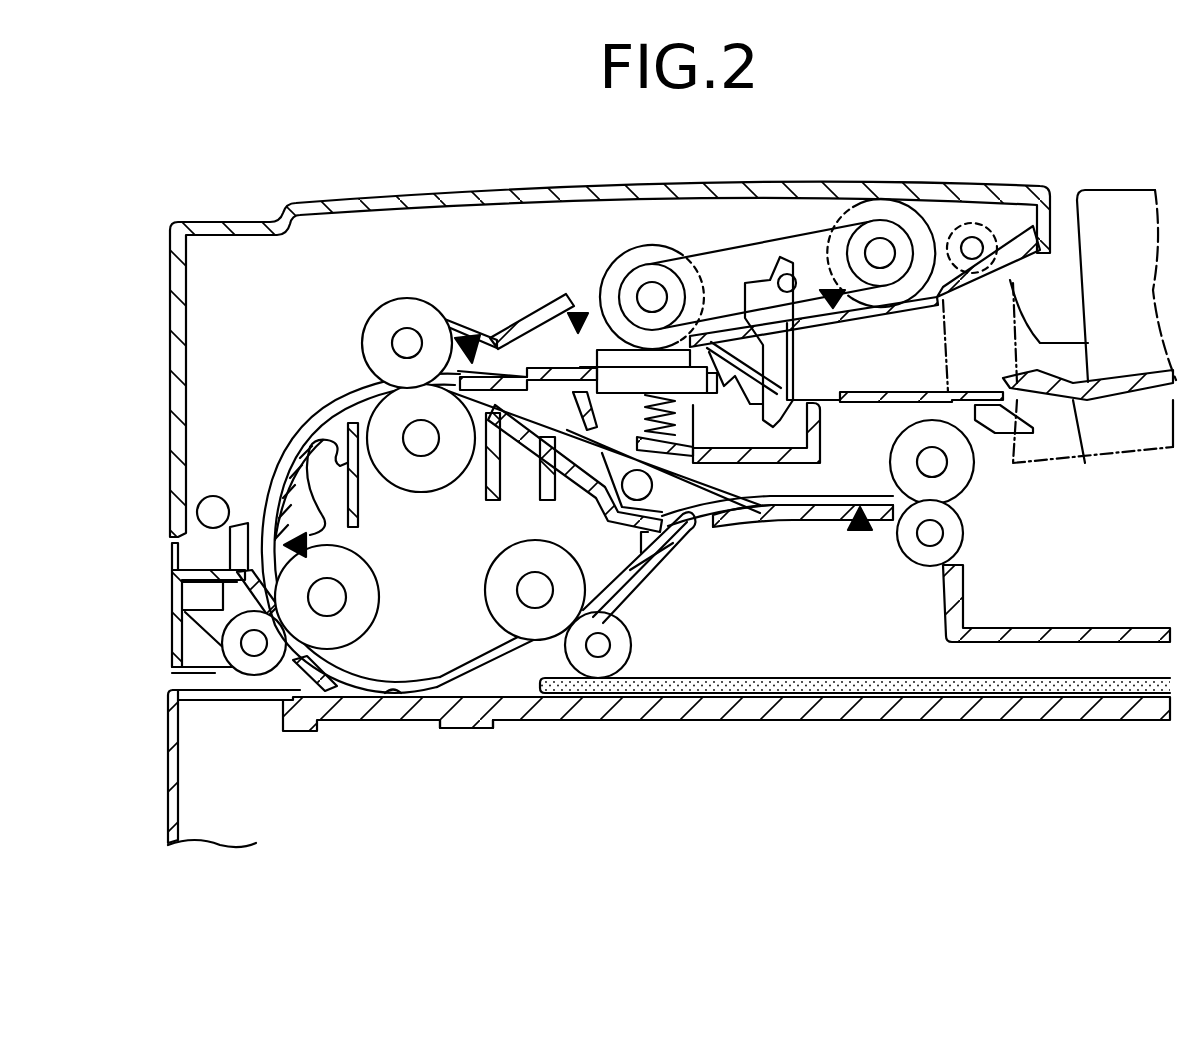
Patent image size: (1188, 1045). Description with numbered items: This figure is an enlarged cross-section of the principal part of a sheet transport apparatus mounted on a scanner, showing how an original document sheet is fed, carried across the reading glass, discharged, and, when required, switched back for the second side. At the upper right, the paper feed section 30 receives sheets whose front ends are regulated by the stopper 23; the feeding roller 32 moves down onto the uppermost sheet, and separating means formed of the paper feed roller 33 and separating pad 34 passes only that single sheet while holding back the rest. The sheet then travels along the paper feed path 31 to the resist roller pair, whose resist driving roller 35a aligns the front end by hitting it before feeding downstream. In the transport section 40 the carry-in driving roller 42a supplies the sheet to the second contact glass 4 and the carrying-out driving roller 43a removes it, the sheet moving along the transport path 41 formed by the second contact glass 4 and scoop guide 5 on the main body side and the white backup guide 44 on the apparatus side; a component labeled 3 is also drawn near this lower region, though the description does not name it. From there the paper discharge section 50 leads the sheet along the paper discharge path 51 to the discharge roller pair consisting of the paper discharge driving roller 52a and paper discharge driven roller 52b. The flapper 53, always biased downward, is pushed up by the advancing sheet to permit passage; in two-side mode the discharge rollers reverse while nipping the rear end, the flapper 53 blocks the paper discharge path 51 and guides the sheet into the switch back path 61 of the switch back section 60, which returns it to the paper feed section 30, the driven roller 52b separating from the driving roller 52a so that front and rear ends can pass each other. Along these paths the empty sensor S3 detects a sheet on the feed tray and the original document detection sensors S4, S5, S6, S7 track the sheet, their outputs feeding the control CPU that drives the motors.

The recording sheet 3 is at (740, 722).
The second contact glass 4 is at (373, 720).
The scoop guide 5 is at (477, 722).
The stopper 23 is at (777, 350).
The paper feed section 30 is at (528, 270).
The paper feed path 31 is at (520, 357).
The feeding roller 32 is at (877, 204).
The paper feed roller 33 is at (633, 255).
The separating pad 34 is at (663, 350).
The resist driving roller 35a is at (387, 420).
The transport section 40 is at (407, 663).
The transport path 41 is at (283, 698).
The carry-in driving roller 42a is at (360, 573).
The carrying-out driving roller 43a is at (560, 550).
The white backup guide 44 is at (467, 677).
The paper discharge section 50 is at (800, 543).
The paper discharge path 51 is at (665, 545).
The paper discharge driving roller 52a is at (960, 477).
The paper discharge driven roller 52b is at (953, 537).
The flapper 53 is at (708, 500).
The switch back section 60 is at (527, 470).
The switch back path 61 is at (478, 484).
The empty sensor S3 is at (826, 288).
The original document detection sensor S4 is at (578, 313).
The original document detection sensor S5 is at (466, 338).
The original document detection sensor S6 is at (310, 490).
The original document detection sensor S7 is at (860, 530).